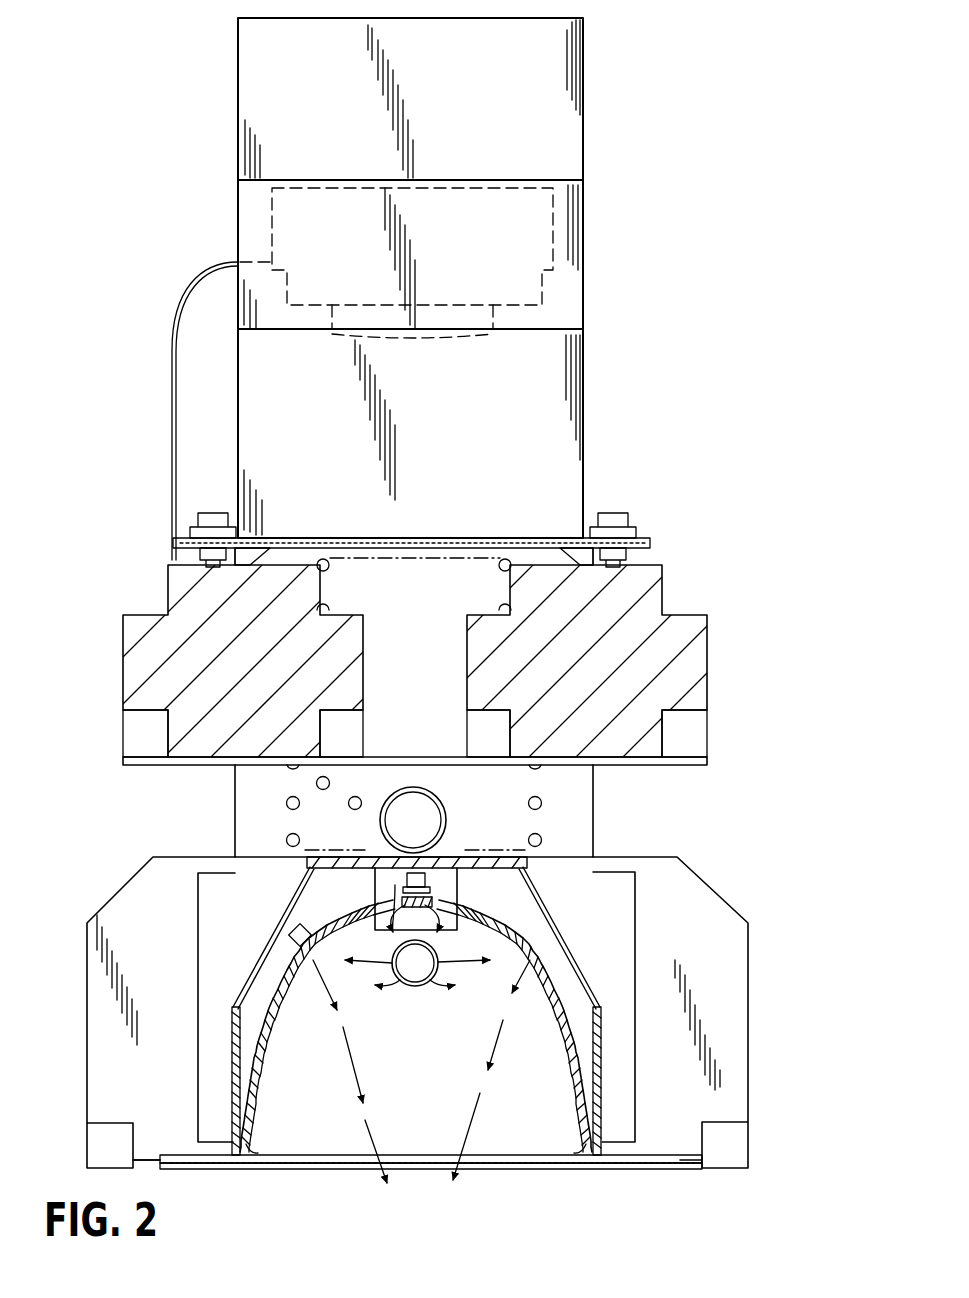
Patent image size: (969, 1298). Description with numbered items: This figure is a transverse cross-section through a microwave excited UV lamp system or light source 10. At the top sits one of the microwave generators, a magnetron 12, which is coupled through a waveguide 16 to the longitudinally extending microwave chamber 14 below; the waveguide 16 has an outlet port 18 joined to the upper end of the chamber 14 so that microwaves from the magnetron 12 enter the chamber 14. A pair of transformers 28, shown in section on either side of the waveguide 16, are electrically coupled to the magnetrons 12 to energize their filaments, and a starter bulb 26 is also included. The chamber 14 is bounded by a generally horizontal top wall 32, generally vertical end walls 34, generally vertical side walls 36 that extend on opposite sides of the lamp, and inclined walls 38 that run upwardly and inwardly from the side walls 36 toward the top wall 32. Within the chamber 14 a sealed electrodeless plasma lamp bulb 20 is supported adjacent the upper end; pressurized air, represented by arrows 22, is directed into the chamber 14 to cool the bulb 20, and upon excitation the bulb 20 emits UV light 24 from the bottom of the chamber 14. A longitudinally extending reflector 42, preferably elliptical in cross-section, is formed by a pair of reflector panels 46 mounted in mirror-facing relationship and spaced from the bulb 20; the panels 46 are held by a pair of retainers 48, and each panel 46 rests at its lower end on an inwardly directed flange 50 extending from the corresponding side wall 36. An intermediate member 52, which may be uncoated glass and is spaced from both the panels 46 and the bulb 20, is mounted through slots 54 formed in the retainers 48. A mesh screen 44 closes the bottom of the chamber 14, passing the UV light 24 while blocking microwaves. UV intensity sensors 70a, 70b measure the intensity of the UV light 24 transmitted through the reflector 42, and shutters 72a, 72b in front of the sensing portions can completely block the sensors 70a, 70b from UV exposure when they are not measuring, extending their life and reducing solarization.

The light source 10 is at (720, 106).
The magnetron 12 is at (585, 162).
The microwave chamber 14 is at (440, 1076).
The waveguide 16 is at (430, 614).
The outlet port 18 is at (604, 866).
The plasma lamp bulb 20 is at (410, 1000).
The arrows 22 is at (421, 961).
The UV light 24 is at (350, 1080).
The starter bulb 26 is at (446, 796).
The transformer 28 is at (150, 618).
The top wall 32 is at (480, 895).
The end wall 34 is at (172, 1010).
The side wall 36 is at (232, 1075).
The inclined wall 38 is at (275, 920).
The reflector 42 is at (560, 960).
The mesh screen 44 is at (430, 1144).
The reflector panel 46 is at (268, 1040).
The retainer 48 is at (417, 880).
The flange 50 is at (258, 1148).
The intermediate member 52 is at (415, 963).
The slot 54 is at (385, 872).
The UV intensity sensor 70a is at (300, 935).
The UV intensity sensor 70b is at (413, 840).
The shutter 72a is at (298, 948).
The shutter 72b is at (435, 898).